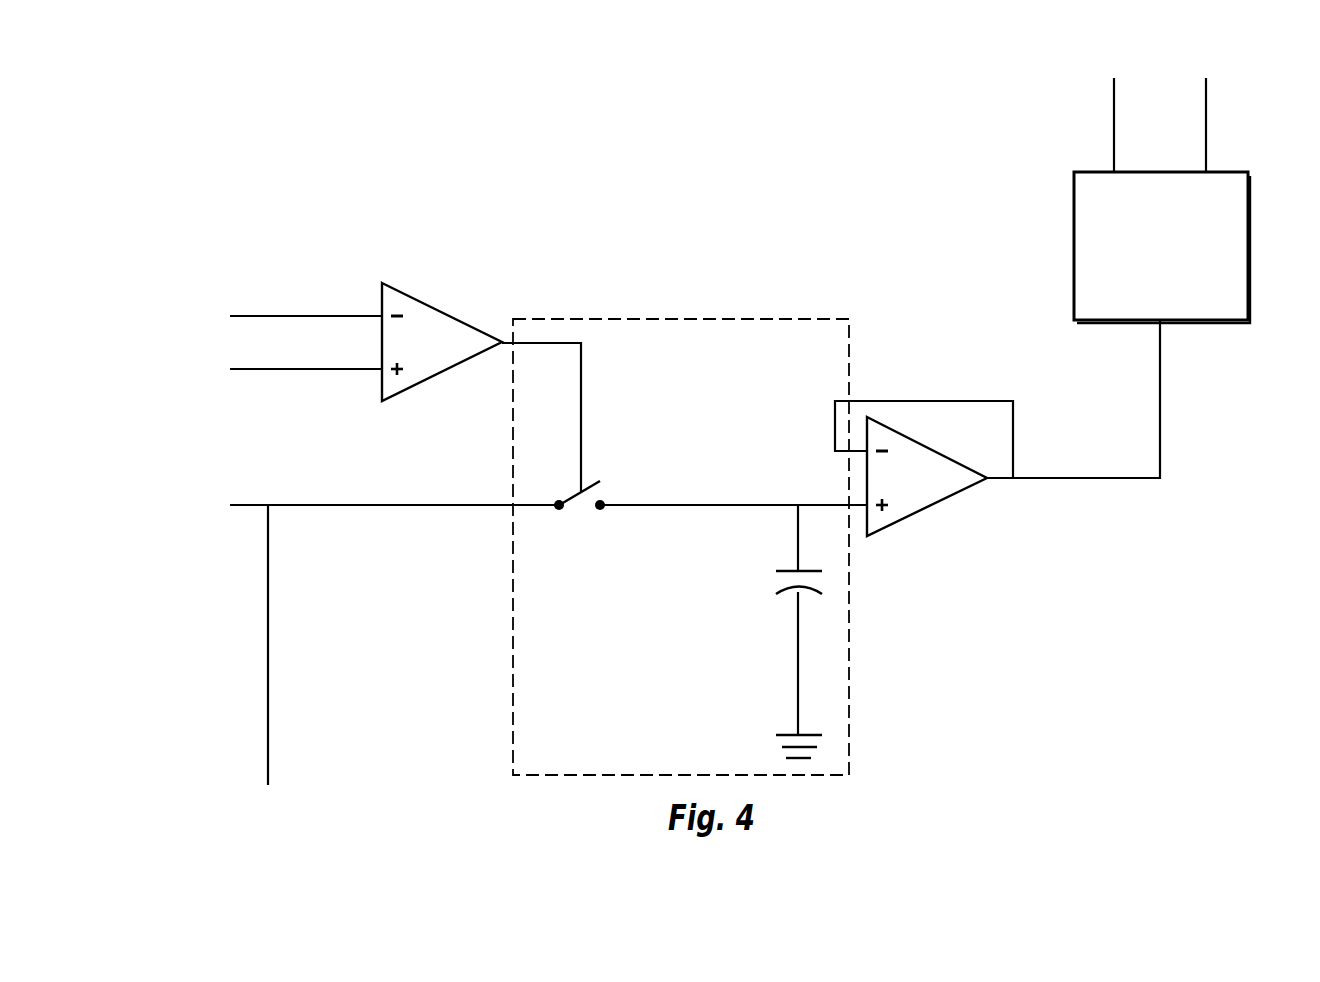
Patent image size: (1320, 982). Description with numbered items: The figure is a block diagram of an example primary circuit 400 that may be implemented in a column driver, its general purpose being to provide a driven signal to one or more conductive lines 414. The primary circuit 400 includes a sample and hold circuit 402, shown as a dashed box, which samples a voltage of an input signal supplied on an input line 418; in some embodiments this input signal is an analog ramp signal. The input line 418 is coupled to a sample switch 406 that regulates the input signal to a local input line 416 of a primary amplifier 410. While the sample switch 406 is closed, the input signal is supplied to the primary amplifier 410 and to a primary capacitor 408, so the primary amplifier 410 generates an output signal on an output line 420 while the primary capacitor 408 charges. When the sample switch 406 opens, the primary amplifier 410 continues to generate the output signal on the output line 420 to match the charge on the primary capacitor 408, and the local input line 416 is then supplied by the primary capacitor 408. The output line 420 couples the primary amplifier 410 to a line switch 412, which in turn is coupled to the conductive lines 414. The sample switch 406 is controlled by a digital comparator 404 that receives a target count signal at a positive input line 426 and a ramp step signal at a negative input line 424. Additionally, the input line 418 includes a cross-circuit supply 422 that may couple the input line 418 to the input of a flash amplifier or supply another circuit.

The primary circuit 400 is at (235, 161).
The sample and hold circuit 402 is at (841, 347).
The digital comparator 404 is at (382, 301).
The sample switch 406 is at (607, 463).
The primary capacitor 408 is at (825, 583).
The primary amplifier 410 is at (897, 523).
The line switch 412 is at (1177, 255).
The conductive lines 414 is at (1206, 127).
The local input line 416 is at (768, 505).
The input line 418 is at (251, 505).
The output line 420 is at (1161, 453).
The cross-circuit supply 422 is at (268, 644).
The negative input line 424 is at (251, 316).
The positive input line 426 is at (251, 369).